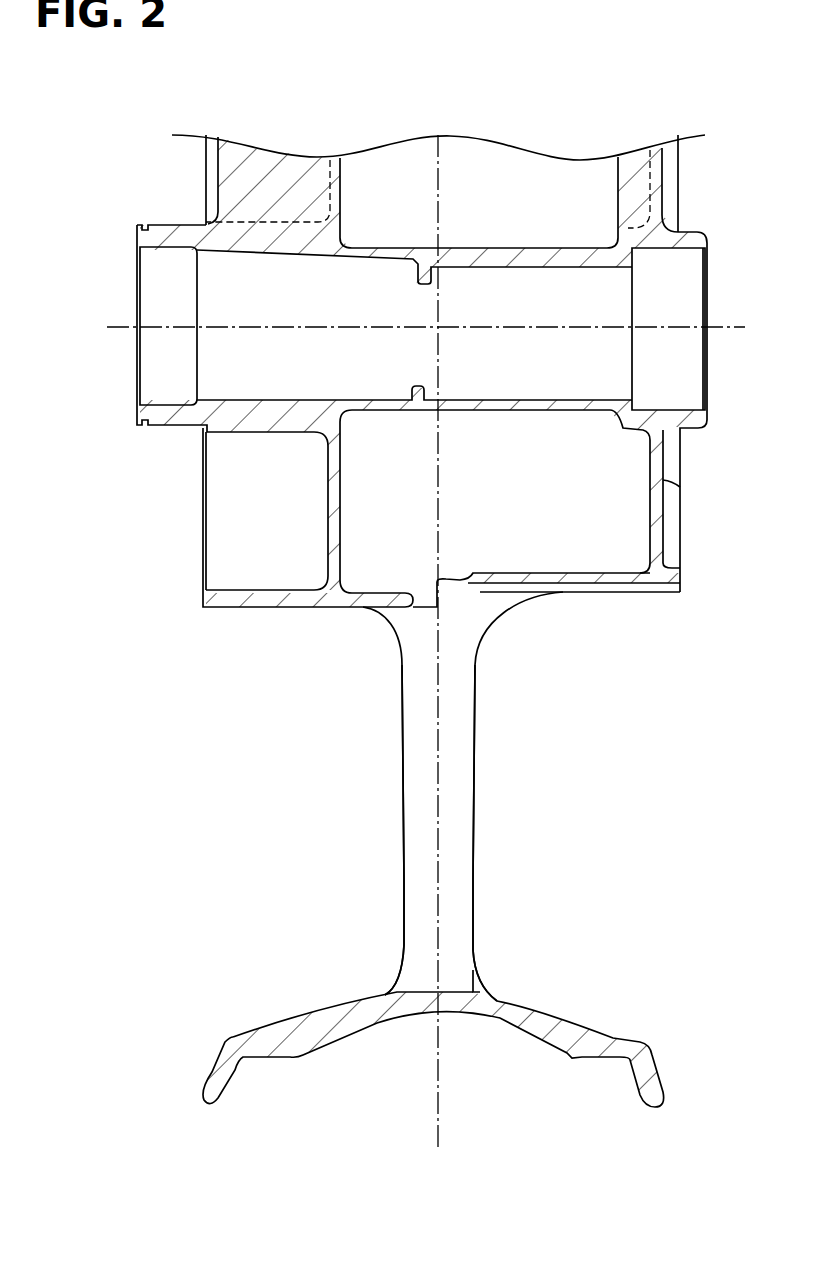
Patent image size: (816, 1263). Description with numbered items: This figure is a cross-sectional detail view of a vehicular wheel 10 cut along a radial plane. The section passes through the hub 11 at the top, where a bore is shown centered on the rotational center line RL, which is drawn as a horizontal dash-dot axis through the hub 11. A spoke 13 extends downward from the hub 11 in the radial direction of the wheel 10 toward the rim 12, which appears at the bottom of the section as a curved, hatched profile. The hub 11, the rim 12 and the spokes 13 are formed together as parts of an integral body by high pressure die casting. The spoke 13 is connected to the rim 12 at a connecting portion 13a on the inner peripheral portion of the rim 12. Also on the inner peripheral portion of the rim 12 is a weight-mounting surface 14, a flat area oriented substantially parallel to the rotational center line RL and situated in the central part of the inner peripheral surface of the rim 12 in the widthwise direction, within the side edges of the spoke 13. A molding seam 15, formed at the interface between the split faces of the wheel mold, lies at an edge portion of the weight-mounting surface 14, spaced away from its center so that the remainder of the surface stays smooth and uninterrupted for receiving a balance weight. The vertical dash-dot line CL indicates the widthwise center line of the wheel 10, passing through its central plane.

The vehicular wheel 10 is at (580, 140).
The hub 11 is at (233, 365).
The rim 12 is at (232, 1040).
The spoke 13 is at (422, 773).
The connecting portion 13a is at (400, 987).
The weight-mounting surface 14 is at (448, 990).
The molding seam 15 is at (480, 982).
The widthwise center line CL is at (442, 187).
The rotational center line RL is at (117, 323).